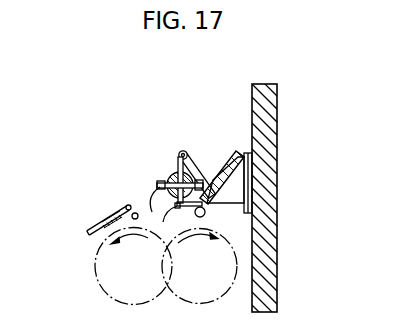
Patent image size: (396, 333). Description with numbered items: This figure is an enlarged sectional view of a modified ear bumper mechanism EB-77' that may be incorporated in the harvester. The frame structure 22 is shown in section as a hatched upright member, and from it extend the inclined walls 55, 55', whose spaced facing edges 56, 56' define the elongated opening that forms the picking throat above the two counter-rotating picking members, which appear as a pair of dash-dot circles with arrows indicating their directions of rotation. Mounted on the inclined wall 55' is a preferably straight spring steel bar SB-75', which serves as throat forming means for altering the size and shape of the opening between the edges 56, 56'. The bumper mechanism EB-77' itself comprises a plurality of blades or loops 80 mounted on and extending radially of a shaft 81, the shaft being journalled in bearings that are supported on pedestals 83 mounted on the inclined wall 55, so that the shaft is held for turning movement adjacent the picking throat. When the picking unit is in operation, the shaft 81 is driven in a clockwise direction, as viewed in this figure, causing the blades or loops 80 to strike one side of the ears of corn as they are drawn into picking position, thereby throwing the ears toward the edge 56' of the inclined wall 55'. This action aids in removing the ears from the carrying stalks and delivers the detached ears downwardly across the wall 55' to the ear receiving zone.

The frame structure 22 is at (277, 222).
The inclined wall 55 is at (258, 181).
The wall edge 56 is at (216, 215).
The wall edge 56' is at (122, 191).
The bumper blades or loops 80 is at (189, 157).
The shaft 81 is at (173, 179).
The pedestals 83 is at (207, 170).
The ear bumper mechanism EB-77' is at (158, 155).
The spring steel bar SB-75' is at (86, 209).
The inclined wall 55' is at (147, 266).